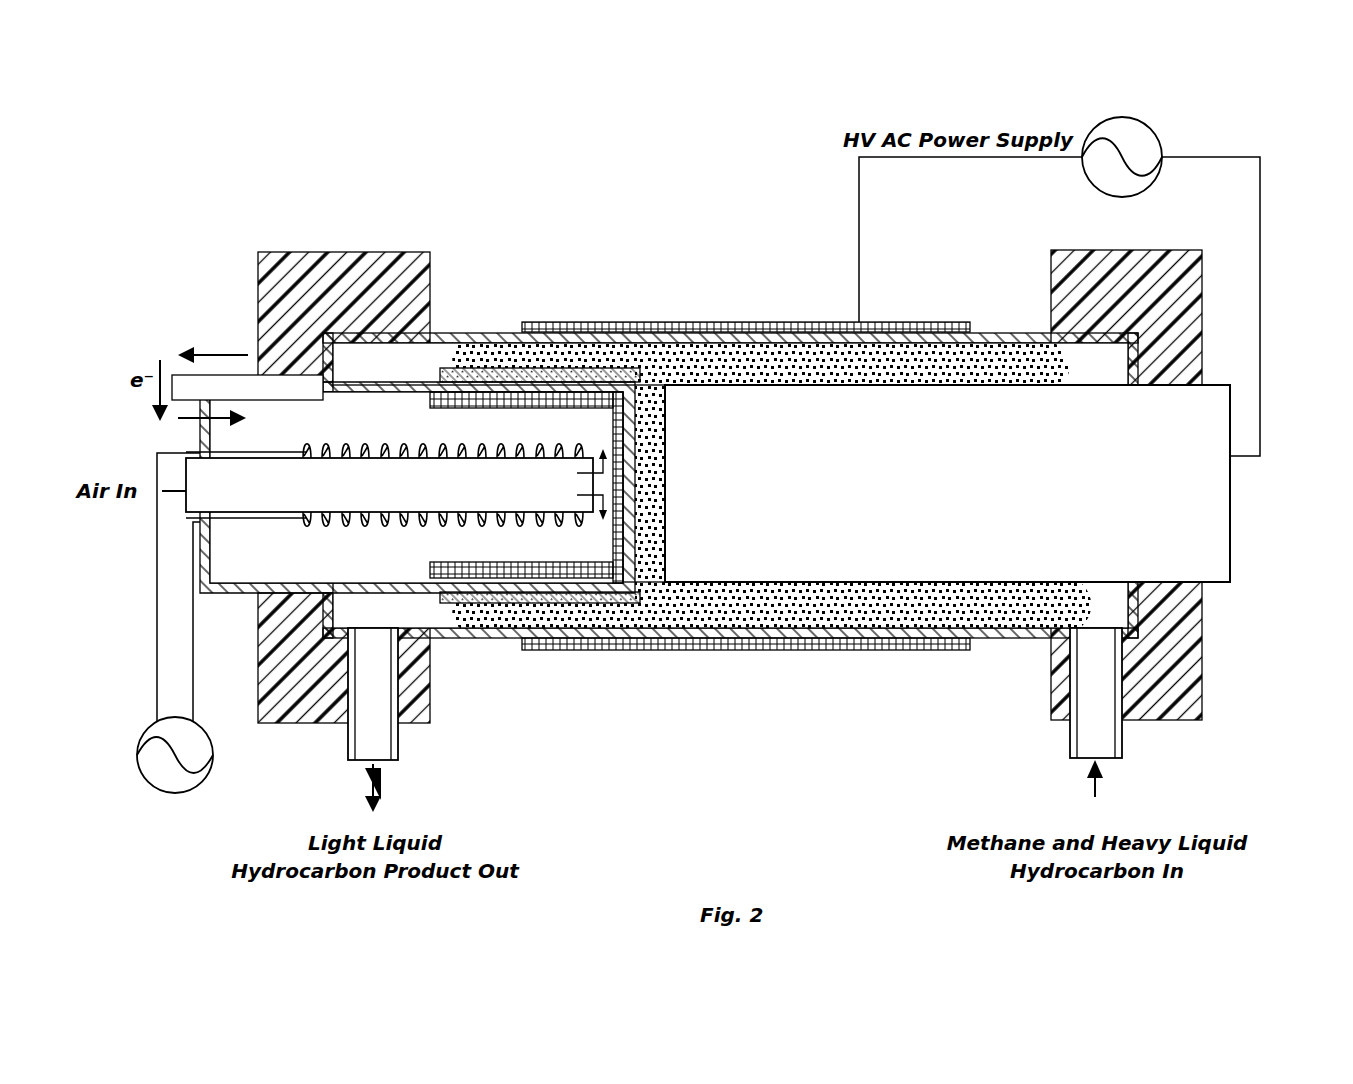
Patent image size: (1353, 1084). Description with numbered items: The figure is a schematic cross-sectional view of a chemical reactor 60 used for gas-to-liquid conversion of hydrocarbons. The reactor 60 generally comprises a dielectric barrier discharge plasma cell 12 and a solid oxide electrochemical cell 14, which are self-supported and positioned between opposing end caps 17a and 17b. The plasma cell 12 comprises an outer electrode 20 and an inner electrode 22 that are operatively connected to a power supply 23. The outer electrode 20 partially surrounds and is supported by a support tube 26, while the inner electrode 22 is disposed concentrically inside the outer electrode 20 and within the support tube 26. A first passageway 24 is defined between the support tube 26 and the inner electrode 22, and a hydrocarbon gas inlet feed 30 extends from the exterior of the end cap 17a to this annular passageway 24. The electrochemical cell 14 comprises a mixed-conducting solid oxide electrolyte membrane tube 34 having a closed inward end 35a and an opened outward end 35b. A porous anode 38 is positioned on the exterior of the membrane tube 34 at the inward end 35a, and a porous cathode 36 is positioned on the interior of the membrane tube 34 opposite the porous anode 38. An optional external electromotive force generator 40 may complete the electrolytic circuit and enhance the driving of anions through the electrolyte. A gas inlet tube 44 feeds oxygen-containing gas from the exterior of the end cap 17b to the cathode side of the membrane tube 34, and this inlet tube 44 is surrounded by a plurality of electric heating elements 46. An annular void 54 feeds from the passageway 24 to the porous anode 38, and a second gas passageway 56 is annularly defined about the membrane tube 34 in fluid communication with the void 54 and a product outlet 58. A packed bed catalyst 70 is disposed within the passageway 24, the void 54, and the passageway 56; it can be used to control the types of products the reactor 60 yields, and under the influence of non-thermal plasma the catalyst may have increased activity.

The dielectric barrier discharge plasma cell 12 is at (1248, 543).
The solid oxide electrochemical cell 14 is at (245, 305).
The end cap 17a is at (1155, 252).
The end cap 17b is at (268, 268).
The outer electrode 20 is at (893, 322).
The inner electrode 22 is at (1233, 485).
The power supply 23 is at (1160, 127).
The first passageway 24 is at (1013, 345).
The support tube 26 is at (492, 634).
The hydrocarbon gas inlet feed 30 is at (1122, 740).
The electrolyte membrane tube 34 is at (205, 435).
The closed inward end 35a is at (593, 370).
The opened outward end 35b is at (205, 592).
The porous cathode 36 is at (445, 563).
The porous anode 38 is at (482, 350).
The external electromotive force generator 40 is at (150, 785).
The gas inlet tube 44 is at (186, 505).
The electric heating elements 46 is at (380, 447).
The annular void 54 is at (650, 650).
The second gas passageway 56 is at (447, 612).
The product outlet 58 is at (348, 738).
The chemical reactor 60 is at (677, 188).
The packed bed catalyst 70 is at (757, 336).